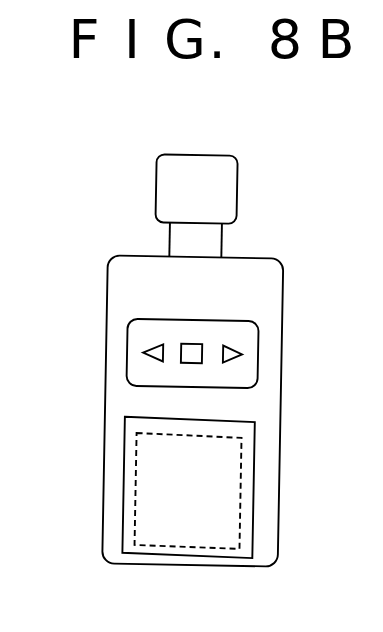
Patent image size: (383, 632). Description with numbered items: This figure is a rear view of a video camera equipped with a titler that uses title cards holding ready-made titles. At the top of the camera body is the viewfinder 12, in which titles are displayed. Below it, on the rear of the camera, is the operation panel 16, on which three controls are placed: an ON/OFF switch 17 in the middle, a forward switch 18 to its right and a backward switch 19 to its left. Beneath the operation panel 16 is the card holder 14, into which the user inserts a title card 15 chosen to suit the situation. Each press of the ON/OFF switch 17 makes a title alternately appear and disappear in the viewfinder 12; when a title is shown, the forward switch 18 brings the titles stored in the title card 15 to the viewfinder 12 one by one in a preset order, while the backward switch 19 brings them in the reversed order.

The viewfinder 12 is at (219, 192).
The card holder 14 is at (255, 432).
The title card 15 is at (243, 485).
The operation panel 16 is at (257, 358).
The ON/OFF switch 17 is at (192, 344).
The forward switch 18 is at (234, 345).
The backward switch 19 is at (152, 342).